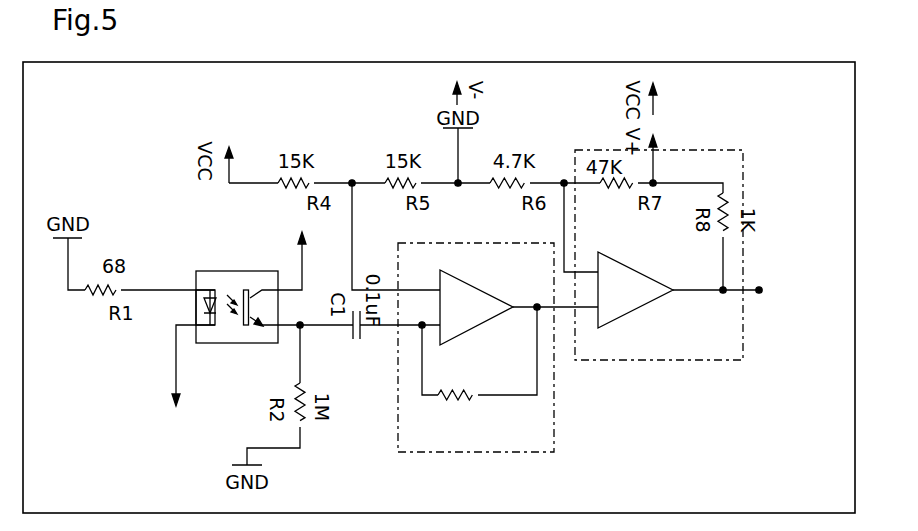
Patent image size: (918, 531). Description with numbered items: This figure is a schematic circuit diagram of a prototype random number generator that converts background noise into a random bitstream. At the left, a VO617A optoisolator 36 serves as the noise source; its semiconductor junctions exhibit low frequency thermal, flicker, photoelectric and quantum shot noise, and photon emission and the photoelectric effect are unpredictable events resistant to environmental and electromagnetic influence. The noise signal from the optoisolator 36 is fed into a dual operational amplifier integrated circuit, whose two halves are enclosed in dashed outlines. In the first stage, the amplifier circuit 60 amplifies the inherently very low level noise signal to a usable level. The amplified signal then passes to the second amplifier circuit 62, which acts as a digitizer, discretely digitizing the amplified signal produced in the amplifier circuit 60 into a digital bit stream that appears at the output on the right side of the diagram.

The optoisolator 36 is at (197, 298).
The amplifier circuit 60 is at (554, 428).
The second amplifier circuit 62 is at (682, 361).